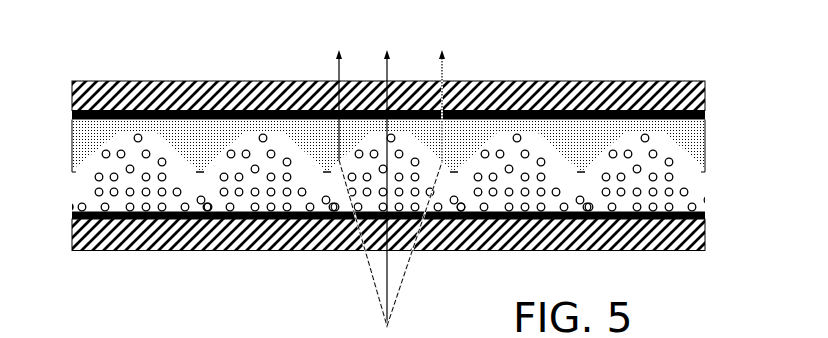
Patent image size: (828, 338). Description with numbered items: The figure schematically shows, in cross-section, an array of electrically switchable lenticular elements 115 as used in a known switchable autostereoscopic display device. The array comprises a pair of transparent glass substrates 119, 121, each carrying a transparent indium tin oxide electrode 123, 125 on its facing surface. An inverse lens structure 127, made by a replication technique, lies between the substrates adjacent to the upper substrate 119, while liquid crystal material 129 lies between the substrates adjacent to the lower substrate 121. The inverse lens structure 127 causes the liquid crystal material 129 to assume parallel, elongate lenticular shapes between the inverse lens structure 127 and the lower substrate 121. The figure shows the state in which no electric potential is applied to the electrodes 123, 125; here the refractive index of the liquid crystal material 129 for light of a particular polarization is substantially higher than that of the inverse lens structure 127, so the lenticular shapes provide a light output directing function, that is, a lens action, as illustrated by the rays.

The electrically switchable lenticular elements 115 is at (220, 147).
The upper transparent glass substrate 119 is at (78, 97).
The lower transparent glass substrate 121 is at (78, 232).
The transparent electrode 123 is at (697, 116).
The transparent electrode 125 is at (697, 216).
The inverse lens structure 127 is at (78, 137).
The liquid crystal material 129 is at (669, 178).